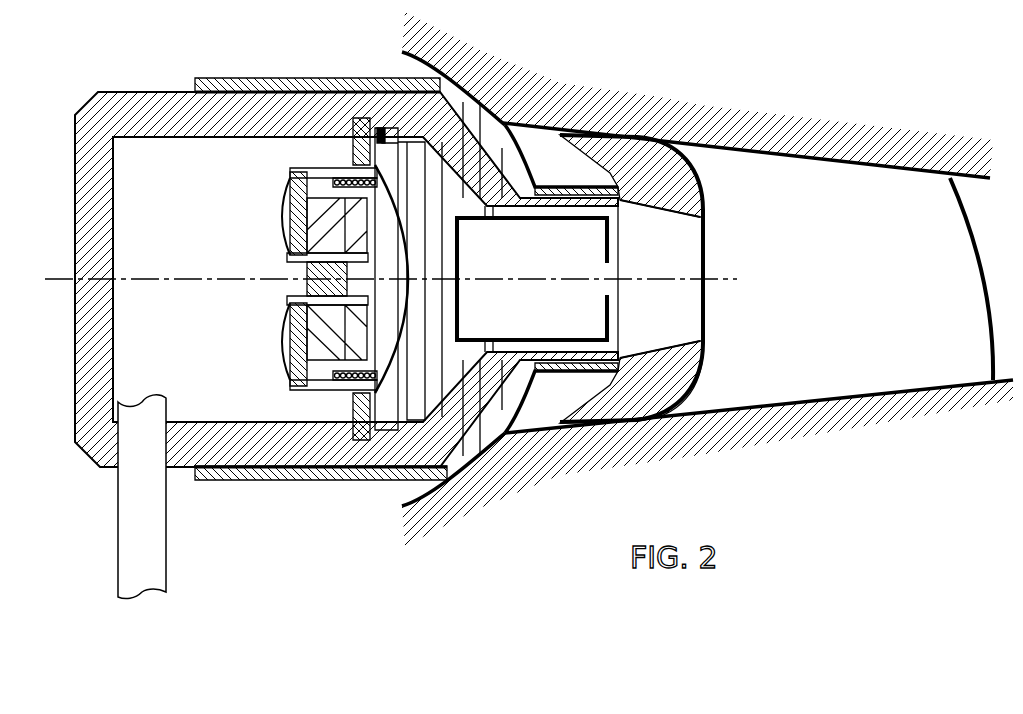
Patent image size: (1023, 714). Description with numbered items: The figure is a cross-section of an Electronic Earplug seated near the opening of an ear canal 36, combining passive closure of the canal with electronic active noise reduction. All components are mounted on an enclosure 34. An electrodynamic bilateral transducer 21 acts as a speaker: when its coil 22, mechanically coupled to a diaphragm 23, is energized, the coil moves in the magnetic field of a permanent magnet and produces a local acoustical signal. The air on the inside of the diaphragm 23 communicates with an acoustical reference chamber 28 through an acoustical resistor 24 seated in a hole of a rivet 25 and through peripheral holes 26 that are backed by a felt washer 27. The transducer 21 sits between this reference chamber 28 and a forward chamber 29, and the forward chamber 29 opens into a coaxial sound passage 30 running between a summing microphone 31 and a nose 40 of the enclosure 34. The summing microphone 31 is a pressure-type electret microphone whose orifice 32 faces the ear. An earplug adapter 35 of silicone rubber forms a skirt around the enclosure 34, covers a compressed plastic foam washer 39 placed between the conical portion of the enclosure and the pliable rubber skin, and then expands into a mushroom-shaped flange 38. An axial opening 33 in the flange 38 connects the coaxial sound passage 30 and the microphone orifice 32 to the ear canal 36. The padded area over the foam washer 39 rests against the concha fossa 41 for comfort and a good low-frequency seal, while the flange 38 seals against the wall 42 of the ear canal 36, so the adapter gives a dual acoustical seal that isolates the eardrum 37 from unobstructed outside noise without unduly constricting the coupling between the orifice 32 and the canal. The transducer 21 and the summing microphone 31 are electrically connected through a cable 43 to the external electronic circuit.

The electrodynamic transducer 21 is at (398, 266).
The coil 22 is at (328, 178).
The diaphragm 23 is at (408, 272).
The acoustical resistor 24 is at (300, 285).
The rivet 25 is at (289, 249).
The peripheral holes 26 is at (385, 172).
The felt washer 27 is at (363, 156).
The reference chamber 28 is at (197, 266).
The forward chamber 29 is at (425, 376).
The coaxial sound passage 30 is at (545, 213).
The summing microphone 31 is at (532, 313).
The orifice 32 is at (603, 282).
The axial opening 33 is at (660, 271).
The enclosure 34 is at (167, 108).
The earplug adapter 35 is at (312, 86).
The ear canal 36 is at (855, 324).
The eardrum 37 is at (970, 243).
The mushroom-shaped flange 38 is at (700, 177).
The compressed plastic foam washer 39 is at (493, 163).
The nose 40 is at (493, 212).
The concha fossa 41 is at (402, 52).
The wall of the ear canal 42 is at (880, 168).
The cable 43 is at (150, 536).